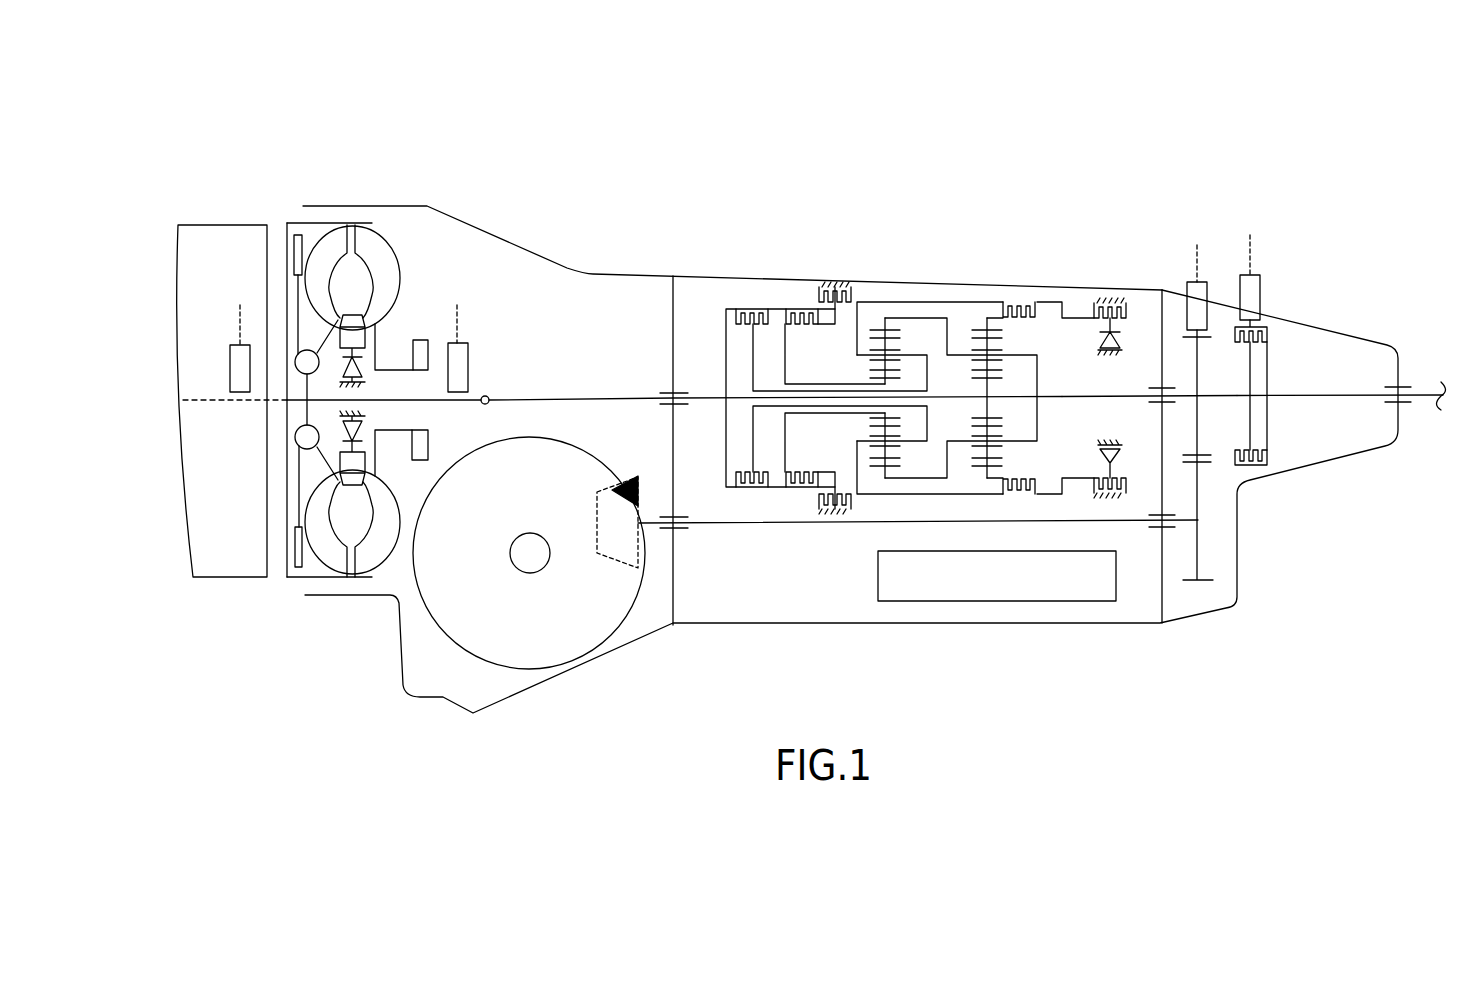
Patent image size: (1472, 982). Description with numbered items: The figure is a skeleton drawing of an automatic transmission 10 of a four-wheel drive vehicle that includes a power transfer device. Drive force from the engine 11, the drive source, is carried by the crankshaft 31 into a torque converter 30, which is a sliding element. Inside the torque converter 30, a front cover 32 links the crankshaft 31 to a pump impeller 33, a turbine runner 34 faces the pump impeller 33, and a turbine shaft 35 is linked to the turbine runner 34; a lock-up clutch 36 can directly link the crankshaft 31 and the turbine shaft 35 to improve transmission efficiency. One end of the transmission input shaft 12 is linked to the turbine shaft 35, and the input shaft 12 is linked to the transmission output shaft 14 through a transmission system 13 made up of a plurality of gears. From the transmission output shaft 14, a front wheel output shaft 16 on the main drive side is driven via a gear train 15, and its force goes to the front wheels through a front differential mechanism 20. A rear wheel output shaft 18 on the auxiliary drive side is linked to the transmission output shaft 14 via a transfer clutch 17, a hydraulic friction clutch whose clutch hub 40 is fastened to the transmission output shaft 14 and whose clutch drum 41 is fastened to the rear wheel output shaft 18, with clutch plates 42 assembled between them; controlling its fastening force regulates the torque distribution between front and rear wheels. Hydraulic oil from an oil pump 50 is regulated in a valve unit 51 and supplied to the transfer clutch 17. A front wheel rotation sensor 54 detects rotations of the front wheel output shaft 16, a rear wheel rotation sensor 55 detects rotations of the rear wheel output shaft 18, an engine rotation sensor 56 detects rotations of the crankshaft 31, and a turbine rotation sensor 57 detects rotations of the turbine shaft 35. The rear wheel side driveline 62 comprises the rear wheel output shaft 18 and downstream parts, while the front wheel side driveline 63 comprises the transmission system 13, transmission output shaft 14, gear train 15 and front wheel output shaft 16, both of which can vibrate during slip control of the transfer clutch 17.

The automatic transmission 10 is at (566, 142).
The engine 11 is at (230, 222).
The transmission input shaft 12 is at (538, 397).
The transmission system 13 is at (959, 303).
The transmission output shaft 14 is at (1136, 396).
The gear train 15 is at (1226, 583).
The front wheel output shaft 16 is at (817, 523).
The transfer clutch 17 is at (1284, 320).
The rear wheel output shaft 18 is at (1347, 395).
The front differential mechanism 20 is at (587, 645).
The torque converter 30 is at (378, 203).
The crankshaft 31 is at (240, 400).
The front cover 32 is at (285, 247).
The pump impeller 33 is at (360, 232).
The turbine runner 34 is at (335, 238).
The turbine shaft 35 is at (435, 397).
The lock-up clutch 36 is at (302, 235).
The clutch hub 40 is at (1242, 367).
The clutch drum 41 is at (1268, 363).
The clutch plates 42 is at (1237, 460).
The oil pump 50 is at (418, 458).
The valve unit 51 is at (957, 592).
The front wheel rotation sensor 54 is at (1192, 290).
The rear wheel rotation sensor 55 is at (1253, 290).
The engine rotation sensor 56 is at (235, 372).
The turbine rotation sensor 57 is at (465, 355).
The driveline of the rear wheel side 62 is at (1424, 356).
The driveline of the front wheel side 63 is at (770, 570).